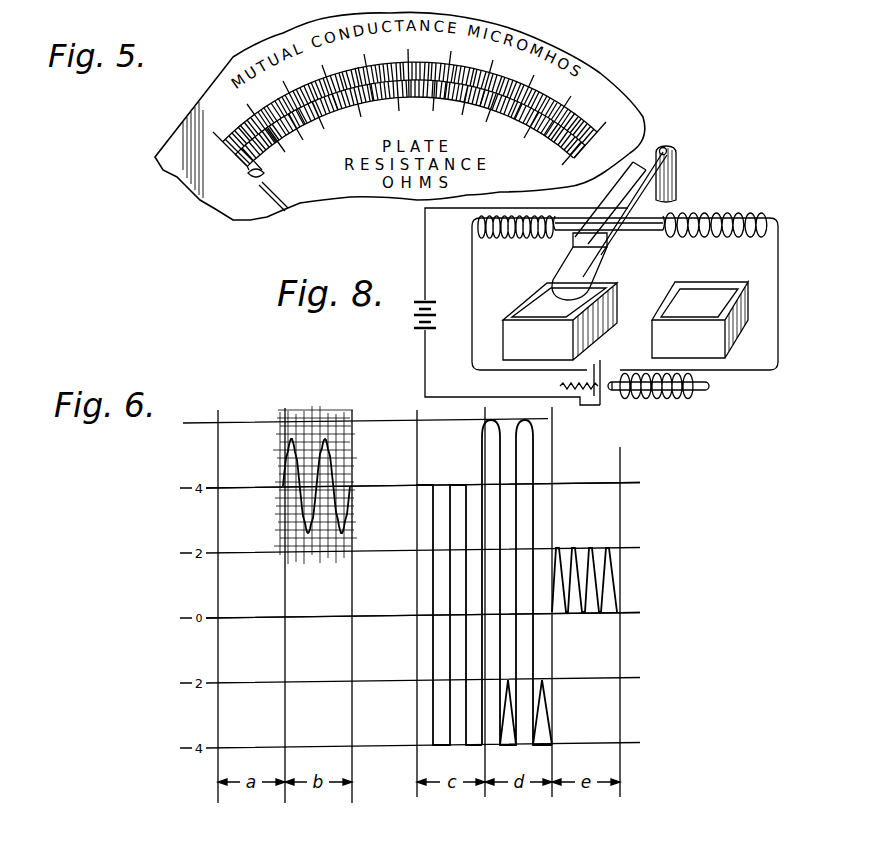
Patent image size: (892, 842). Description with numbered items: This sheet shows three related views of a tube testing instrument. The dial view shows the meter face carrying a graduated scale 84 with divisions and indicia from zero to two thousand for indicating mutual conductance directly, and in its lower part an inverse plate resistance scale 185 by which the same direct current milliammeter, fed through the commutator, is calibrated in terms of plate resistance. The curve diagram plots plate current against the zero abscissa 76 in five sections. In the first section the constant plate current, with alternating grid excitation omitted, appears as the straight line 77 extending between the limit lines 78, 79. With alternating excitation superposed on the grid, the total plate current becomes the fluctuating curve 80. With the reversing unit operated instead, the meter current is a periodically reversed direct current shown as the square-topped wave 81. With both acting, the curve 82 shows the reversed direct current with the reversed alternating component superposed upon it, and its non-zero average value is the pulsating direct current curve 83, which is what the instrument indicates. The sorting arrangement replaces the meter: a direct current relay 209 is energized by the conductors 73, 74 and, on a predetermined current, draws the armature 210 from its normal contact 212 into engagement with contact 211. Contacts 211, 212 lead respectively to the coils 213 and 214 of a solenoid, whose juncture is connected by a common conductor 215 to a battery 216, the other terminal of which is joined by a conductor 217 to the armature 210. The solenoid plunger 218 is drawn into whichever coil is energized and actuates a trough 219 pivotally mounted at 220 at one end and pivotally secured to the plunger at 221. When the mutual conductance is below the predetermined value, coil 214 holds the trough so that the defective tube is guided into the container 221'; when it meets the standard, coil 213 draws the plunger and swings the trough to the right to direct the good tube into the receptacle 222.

In FIG. 5, the graduated scale 84 is at (413, 63).
In FIG. 5, the plate resistance scale 185 is at (472, 106).
In FIG. 8, the common conductor 215 is at (442, 208).
In FIG. 8, the battery 216 is at (420, 332).
In FIG. 8, the conductor 217 is at (453, 397).
In FIG. 8, the contact 212 is at (590, 368).
In FIG. 8, the contact 211 is at (632, 369).
In FIG. 8, the coil 213 is at (727, 212).
In FIG. 8, the coil 214 is at (490, 237).
In FIG. 8, the solenoid plunger 218 is at (687, 240).
In FIG. 8, the pivot 220 is at (672, 149).
In FIG. 8, the pivotal connection 221 is at (626, 214).
In FIG. 8, the trough 219 is at (573, 270).
In FIG. 8, the container for defective tubes 221' is at (560, 321).
In FIG. 8, the receptacle for accepted tubes 222 is at (700, 320).
In FIG. 8, the armature 210 is at (560, 385).
In FIG. 8, the relay 209 is at (705, 385).
In FIG. 8, the conductor 74 is at (693, 396).
In FIG. 8, the conductor 73 is at (624, 398).
In FIG. 6, the limit line 78 is at (218, 773).
In FIG. 6, the limit line 79 is at (285, 765).
In FIG. 6, the straight line 77 is at (237, 487).
In FIG. 6, the zero abscissa 76 is at (245, 617).
In FIG. 6, the curve 80 is at (298, 465).
In FIG. 6, the square-topped wave 81 is at (417, 583).
In FIG. 6, the curve 82 is at (482, 468).
In FIG. 6, the curve 83 is at (562, 548).